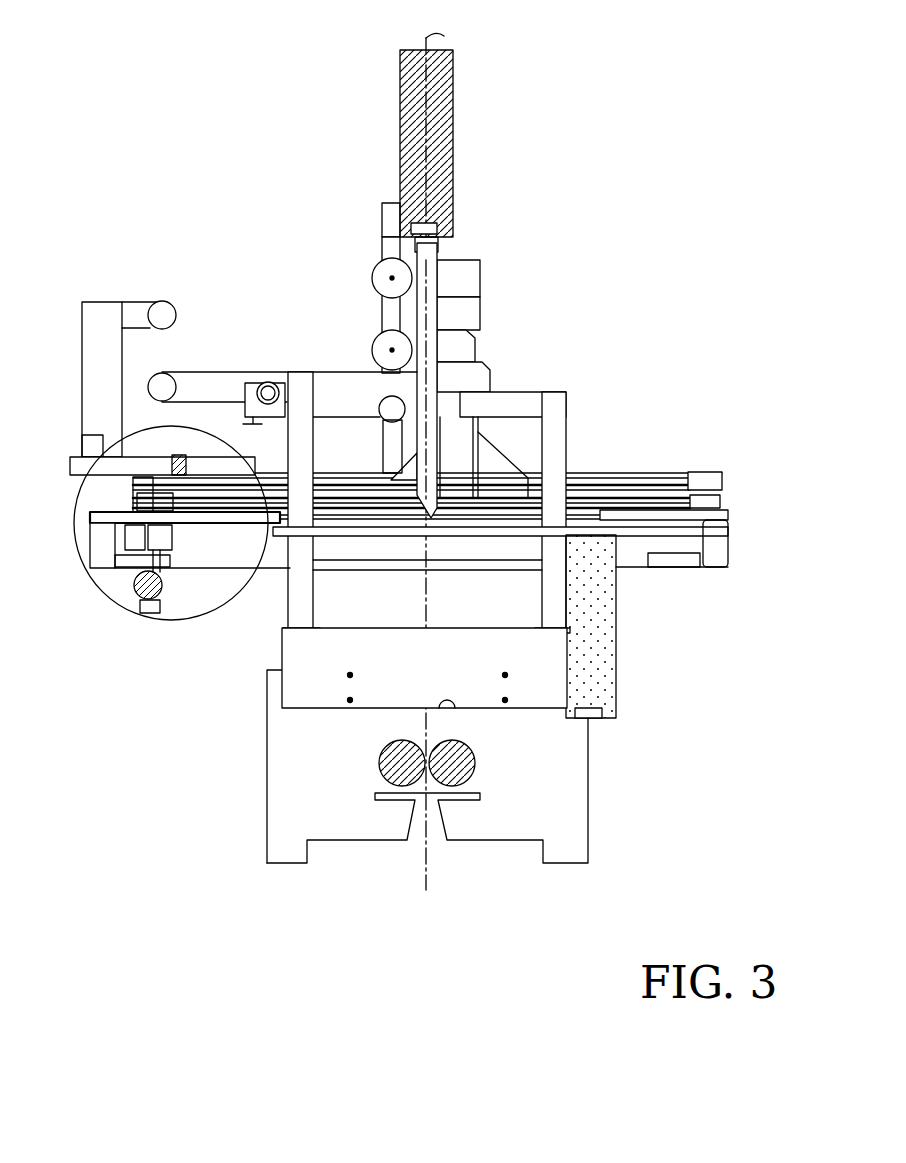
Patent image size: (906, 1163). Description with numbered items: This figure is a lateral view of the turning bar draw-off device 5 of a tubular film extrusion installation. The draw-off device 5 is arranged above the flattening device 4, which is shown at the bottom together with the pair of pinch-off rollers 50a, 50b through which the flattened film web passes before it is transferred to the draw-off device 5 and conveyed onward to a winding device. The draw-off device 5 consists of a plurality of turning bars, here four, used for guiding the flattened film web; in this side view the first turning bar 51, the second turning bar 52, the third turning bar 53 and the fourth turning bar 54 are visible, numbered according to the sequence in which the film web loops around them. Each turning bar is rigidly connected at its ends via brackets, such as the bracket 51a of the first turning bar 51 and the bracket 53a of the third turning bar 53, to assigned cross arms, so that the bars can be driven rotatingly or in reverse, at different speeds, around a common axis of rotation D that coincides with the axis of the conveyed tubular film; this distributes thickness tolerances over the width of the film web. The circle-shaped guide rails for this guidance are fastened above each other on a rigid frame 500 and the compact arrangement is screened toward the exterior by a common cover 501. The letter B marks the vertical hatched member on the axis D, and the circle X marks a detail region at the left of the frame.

The turning bar draw-off device 5 is at (548, 318).
The hatched column / drive housing B is at (454, 120).
The common axis of rotation D is at (435, 22).
The fourth turning bar 54 is at (376, 264).
The second turning bar 52 is at (376, 340).
The third turning bar 53 is at (160, 301).
The bracket 53a is at (82, 368).
The first turning bar 51 is at (164, 373).
The bracket 51a is at (228, 380).
The detail region X is at (180, 622).
The common cover 501 is at (703, 470).
The rigid frame 500 is at (728, 508).
The flattening device 4 is at (590, 794).
The pinch-off roller 50a is at (380, 762).
The pinch-off roller 50b is at (472, 762).